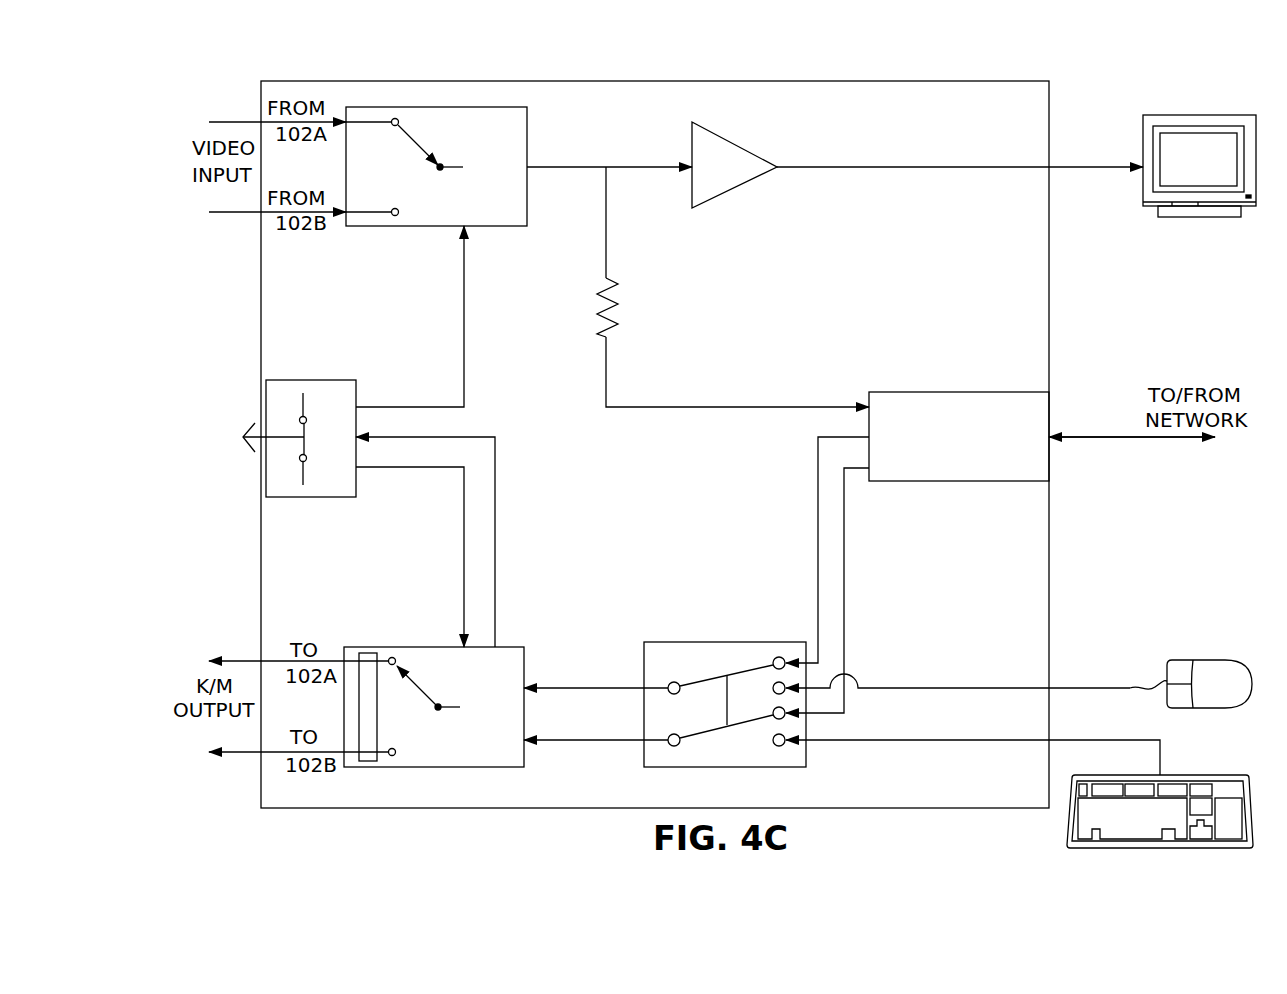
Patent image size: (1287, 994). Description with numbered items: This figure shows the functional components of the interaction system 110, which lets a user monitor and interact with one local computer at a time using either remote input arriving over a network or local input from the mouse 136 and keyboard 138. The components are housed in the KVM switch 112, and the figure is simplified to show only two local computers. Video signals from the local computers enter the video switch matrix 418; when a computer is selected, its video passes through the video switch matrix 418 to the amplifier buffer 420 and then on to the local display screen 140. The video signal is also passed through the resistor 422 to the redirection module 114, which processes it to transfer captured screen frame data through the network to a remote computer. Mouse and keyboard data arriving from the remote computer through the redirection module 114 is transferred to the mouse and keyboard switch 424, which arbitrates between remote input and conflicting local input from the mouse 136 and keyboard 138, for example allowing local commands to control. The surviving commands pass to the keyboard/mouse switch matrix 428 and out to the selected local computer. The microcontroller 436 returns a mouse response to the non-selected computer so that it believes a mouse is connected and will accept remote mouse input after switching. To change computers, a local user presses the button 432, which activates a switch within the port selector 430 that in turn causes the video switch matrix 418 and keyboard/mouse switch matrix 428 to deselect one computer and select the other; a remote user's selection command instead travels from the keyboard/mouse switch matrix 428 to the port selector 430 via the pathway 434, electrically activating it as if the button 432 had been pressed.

The interaction system 110 is at (218, 320).
The KVM switch 112 is at (1049, 322).
The redirection module 114 is at (959, 436).
The mouse 136 is at (1240, 660).
The keyboard 138 is at (1178, 774).
The local display screen 140 is at (1245, 115).
The video switch matrix 418 is at (413, 228).
The amplifier buffer 420 is at (748, 150).
The resistor 422 is at (618, 303).
The mouse and keyboard switch 424 is at (718, 640).
The keyboard/mouse switch matrix 428 is at (428, 702).
The port selector 430 is at (296, 380).
The button 432 is at (250, 455).
The pathway 434 is at (497, 500).
The microcontroller 436 is at (372, 727).